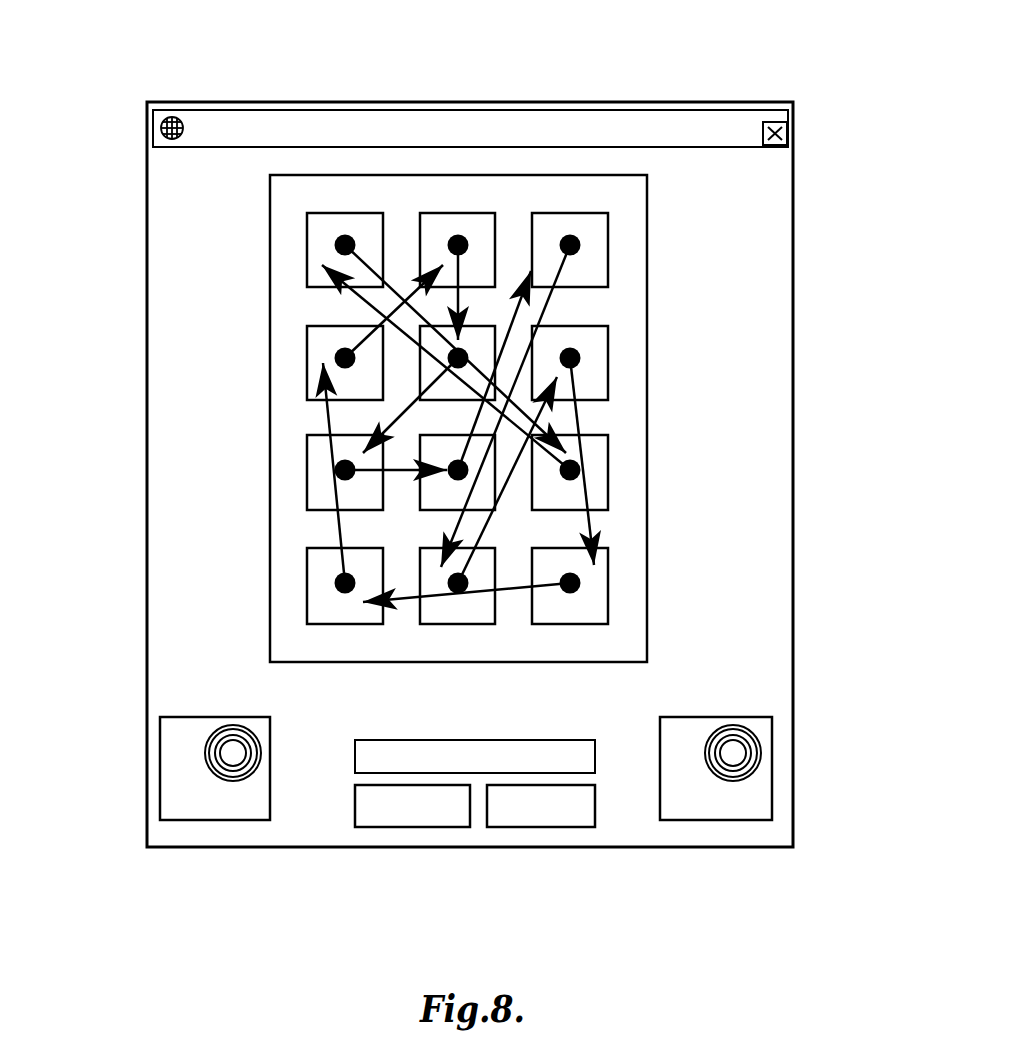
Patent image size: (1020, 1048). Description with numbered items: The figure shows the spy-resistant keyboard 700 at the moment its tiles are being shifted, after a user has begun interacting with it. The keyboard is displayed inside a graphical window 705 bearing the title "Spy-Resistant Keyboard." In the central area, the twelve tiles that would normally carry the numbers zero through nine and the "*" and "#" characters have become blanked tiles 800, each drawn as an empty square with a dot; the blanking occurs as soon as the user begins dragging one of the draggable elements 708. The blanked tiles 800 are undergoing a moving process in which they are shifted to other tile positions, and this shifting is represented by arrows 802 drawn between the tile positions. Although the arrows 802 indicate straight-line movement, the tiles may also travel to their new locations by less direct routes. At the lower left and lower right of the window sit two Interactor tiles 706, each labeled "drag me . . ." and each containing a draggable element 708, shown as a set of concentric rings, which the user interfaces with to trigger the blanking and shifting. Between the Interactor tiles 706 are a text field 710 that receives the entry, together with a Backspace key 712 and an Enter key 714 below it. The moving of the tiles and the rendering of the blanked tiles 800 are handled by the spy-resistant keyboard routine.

The spy-resistant keyboard 700 is at (118, 165).
The graphical window 705 is at (793, 512).
The blanked tiles 800 is at (643, 260).
The arrows 802 is at (552, 301).
The Interactor tiles 706 is at (193, 813).
The draggable element 708 is at (210, 752).
The text field 710 is at (583, 762).
The Backspace key 712 is at (398, 817).
The Enter key 714 is at (550, 823).